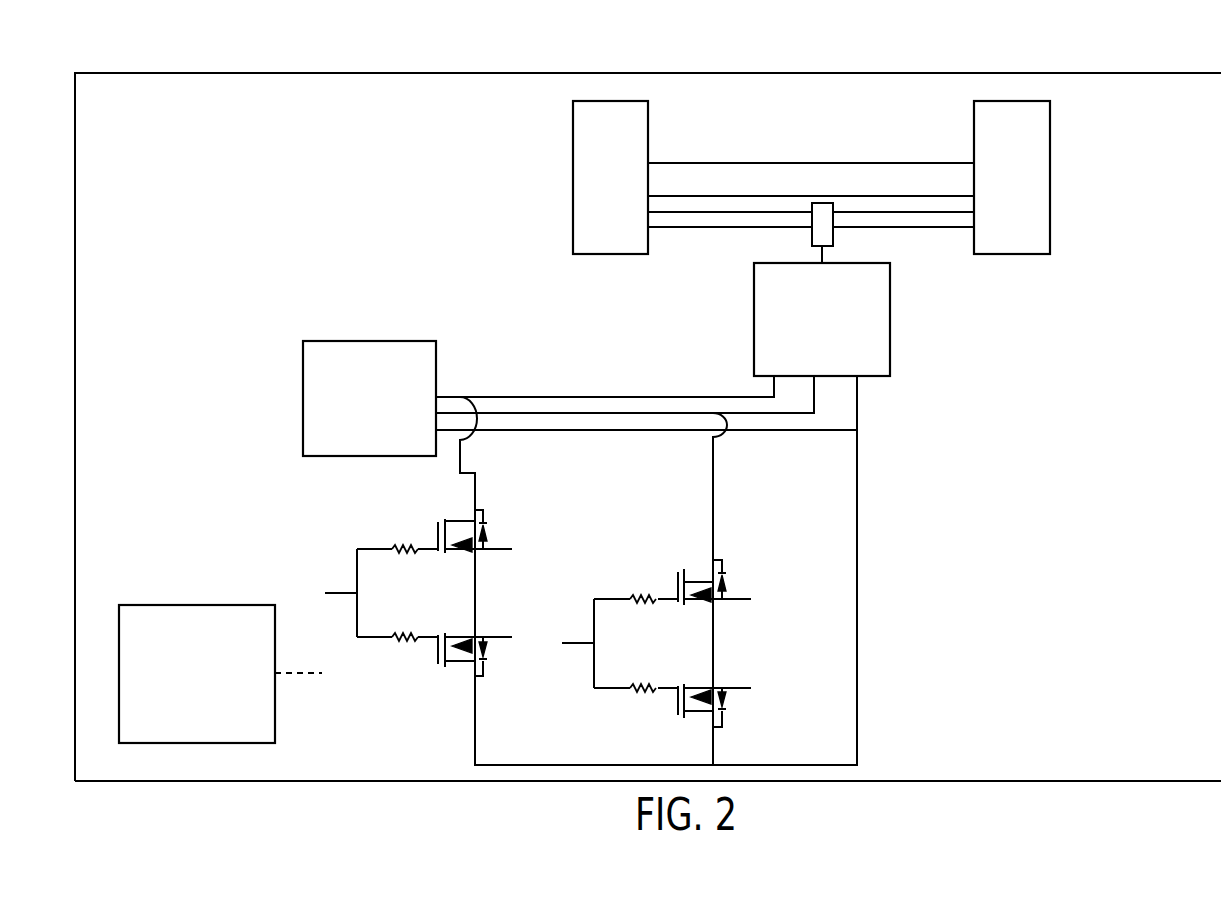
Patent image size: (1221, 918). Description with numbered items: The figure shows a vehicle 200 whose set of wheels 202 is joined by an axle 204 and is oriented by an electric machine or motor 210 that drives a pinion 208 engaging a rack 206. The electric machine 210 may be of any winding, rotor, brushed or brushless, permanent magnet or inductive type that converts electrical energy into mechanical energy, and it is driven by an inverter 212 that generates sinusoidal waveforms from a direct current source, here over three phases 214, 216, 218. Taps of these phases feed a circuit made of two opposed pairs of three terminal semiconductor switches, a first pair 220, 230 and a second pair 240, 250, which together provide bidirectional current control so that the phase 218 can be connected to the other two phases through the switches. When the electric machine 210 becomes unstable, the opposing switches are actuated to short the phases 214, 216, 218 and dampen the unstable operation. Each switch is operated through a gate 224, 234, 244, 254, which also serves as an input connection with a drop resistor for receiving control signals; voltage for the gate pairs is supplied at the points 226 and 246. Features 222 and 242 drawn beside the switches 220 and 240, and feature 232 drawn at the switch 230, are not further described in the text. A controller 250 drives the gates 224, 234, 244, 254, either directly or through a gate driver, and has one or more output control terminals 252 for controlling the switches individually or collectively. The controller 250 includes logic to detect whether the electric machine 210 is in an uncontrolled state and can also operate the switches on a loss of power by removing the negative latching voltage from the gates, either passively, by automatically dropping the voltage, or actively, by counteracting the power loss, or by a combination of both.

The vehicle 200 is at (859, 72).
The wheel 202 is at (573, 183).
The axle 204 is at (797, 162).
The rack 206 is at (922, 228).
The pinion 208 is at (812, 232).
The electric machine 210 is at (890, 331).
The inverter 212 is at (362, 341).
The electric machine phase 214 is at (676, 397).
The electric machine phase 216 is at (480, 405).
The electric machine phase 218 is at (859, 410).
The three terminal semiconductor switch 220 is at (503, 526).
The body diode of first transistor 222 is at (497, 549).
The gate 224 is at (430, 547).
The first gate drive node 226 is at (342, 592).
The three terminal semiconductor switch 230 is at (503, 617).
The drain of second transistor 232 is at (485, 674).
The gate 234 is at (430, 634).
The three terminal semiconductor switch 240 is at (741, 577).
The body diode of third transistor 242 is at (735, 600).
The gate 244 is at (668, 596).
The second gate drive node 246 is at (584, 642).
The controller 250 is at (741, 669).
The output control terminal 252 is at (722, 722).
The gate 254 is at (668, 685).